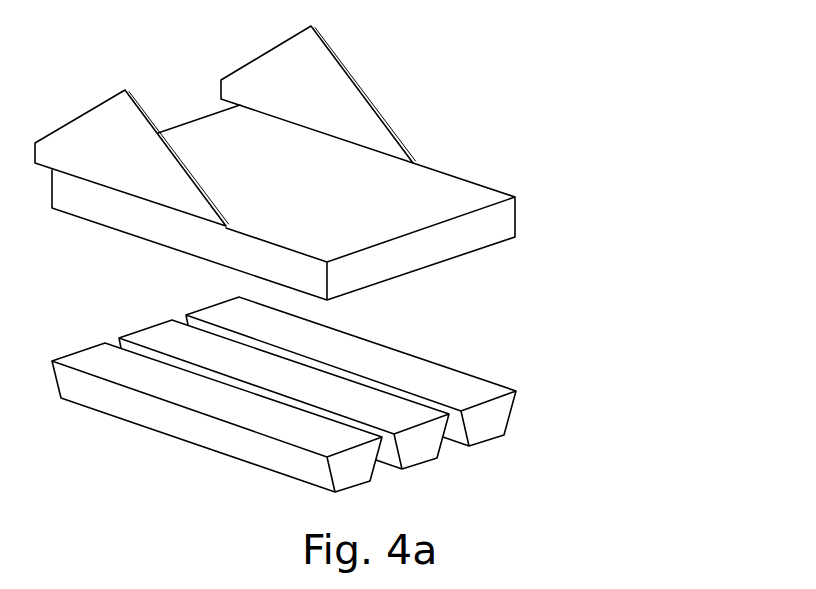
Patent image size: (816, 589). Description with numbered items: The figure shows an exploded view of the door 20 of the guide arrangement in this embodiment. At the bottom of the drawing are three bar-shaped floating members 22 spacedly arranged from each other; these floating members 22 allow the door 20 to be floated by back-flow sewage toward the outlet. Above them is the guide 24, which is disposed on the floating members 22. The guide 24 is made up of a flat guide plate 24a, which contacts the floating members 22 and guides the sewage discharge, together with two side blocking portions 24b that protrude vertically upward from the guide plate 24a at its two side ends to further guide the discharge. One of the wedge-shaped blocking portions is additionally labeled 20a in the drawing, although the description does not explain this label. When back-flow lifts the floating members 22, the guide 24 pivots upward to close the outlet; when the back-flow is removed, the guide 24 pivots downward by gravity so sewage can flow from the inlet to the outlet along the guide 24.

The door 20 is at (380, 259).
The inclined prism surface 20a is at (95, 128).
The floating members 22 is at (359, 394).
The guide 24 is at (350, 163).
The guide plate 24a is at (608, 152).
The side blocking portions 24b is at (320, 126).